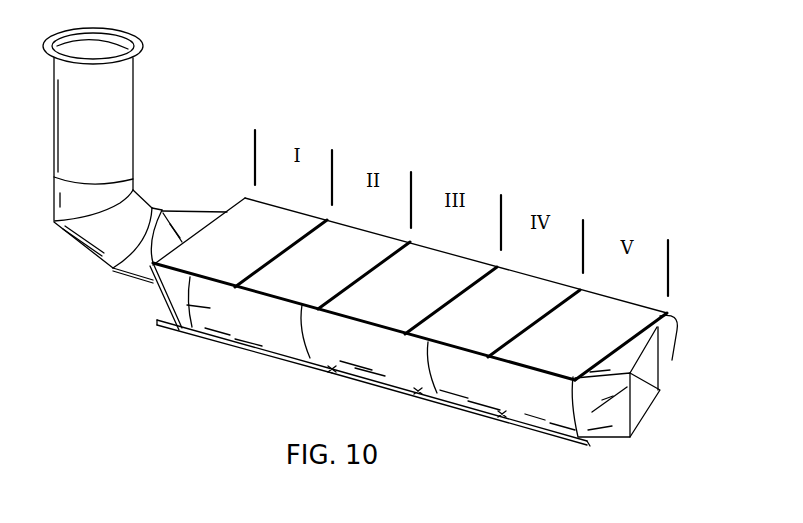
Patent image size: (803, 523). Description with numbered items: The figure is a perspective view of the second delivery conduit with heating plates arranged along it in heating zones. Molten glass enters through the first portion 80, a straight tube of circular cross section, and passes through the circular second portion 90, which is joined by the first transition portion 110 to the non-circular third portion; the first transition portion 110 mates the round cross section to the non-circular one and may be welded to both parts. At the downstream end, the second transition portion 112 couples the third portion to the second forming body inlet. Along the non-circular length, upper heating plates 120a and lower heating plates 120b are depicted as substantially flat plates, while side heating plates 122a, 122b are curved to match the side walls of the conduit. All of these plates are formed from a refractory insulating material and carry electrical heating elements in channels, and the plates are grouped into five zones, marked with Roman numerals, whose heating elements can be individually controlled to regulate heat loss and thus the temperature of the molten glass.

The first portion 80 is at (133, 99).
The second portion 90 is at (146, 190).
The first transition portion 110 is at (203, 210).
The upper heating plates 120a is at (258, 212).
The lower heating plates 120b is at (533, 430).
The side heating plate 122a is at (172, 325).
The side heating plate 122b is at (672, 360).
The second transition portion 112 is at (640, 437).